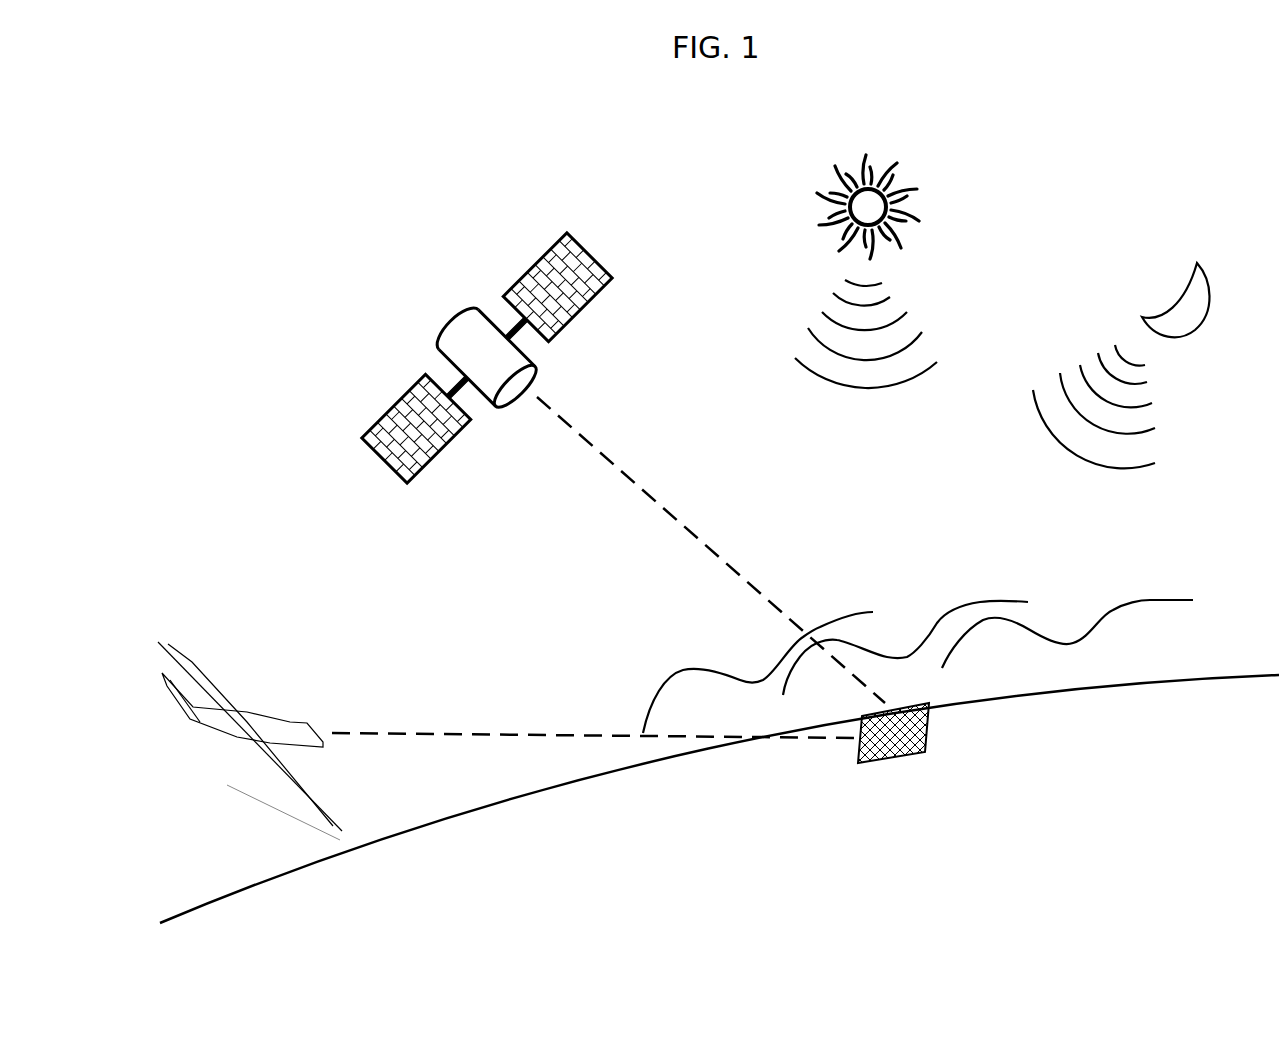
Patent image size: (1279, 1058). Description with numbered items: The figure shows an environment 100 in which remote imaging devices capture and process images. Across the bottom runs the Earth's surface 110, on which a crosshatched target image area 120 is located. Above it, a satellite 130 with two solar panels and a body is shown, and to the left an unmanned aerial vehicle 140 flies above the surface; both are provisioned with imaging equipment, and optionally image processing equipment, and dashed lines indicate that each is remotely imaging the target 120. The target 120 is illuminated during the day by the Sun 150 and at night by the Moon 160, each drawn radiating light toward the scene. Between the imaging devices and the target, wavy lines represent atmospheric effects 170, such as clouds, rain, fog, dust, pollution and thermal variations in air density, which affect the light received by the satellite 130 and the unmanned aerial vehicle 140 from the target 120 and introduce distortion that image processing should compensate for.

The environment 100 is at (363, 210).
The Earth's surface 110 is at (993, 696).
The target image area 120 is at (886, 762).
The satellite 130 is at (383, 420).
The unmanned aerial vehicle 140 is at (167, 644).
The Sun 150 is at (822, 211).
The Moon 160 is at (1211, 276).
The atmospheric effects 170 is at (917, 590).